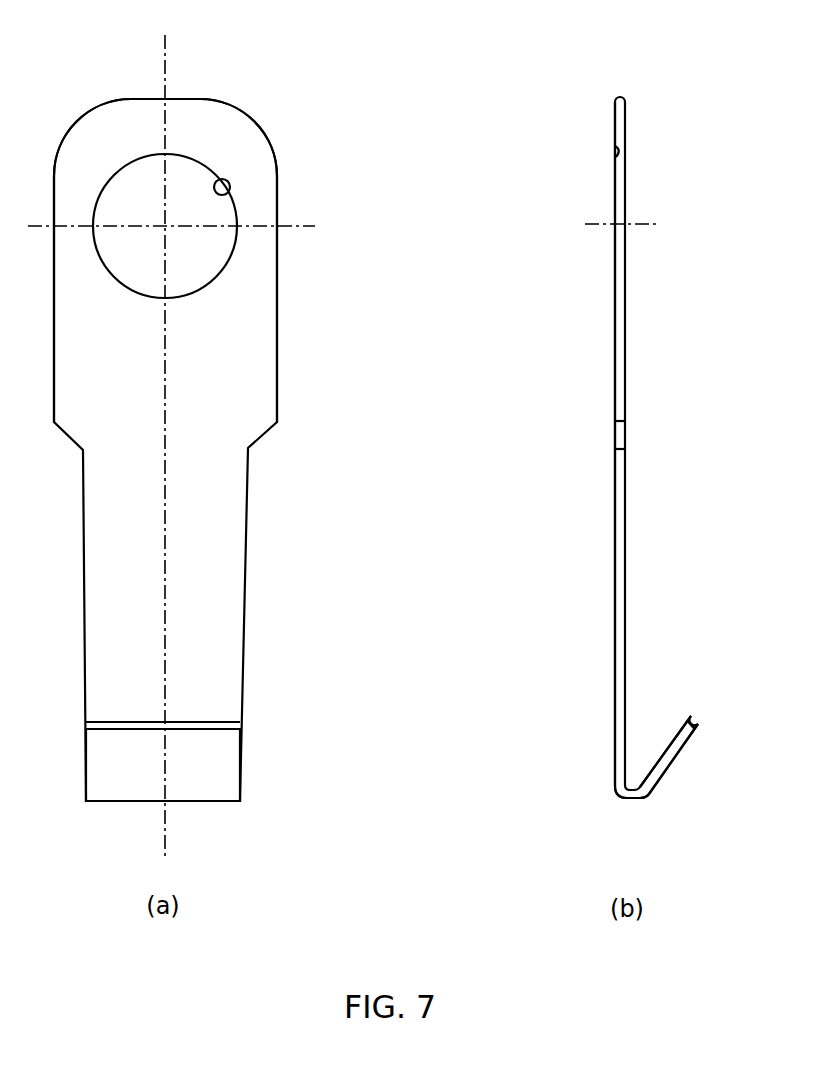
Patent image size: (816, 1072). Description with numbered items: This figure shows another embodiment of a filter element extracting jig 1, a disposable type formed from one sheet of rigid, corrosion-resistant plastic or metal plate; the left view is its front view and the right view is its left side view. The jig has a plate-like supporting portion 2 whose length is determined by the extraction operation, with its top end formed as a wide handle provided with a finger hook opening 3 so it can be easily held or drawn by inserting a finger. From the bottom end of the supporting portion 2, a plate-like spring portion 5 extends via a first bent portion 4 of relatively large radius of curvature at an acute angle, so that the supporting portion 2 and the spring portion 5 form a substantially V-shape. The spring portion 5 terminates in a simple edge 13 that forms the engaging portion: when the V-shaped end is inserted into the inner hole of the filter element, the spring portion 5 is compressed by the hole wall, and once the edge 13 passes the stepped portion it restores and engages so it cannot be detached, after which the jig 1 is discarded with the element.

The filter element extracting jig 1 is at (308, 410).
The supporting portion 2 is at (277, 325).
The finger hook opening 3 is at (232, 195).
The first bent portion 4 is at (614, 801).
The spring portion 5 is at (219, 748).
The edge 13 is at (240, 722).